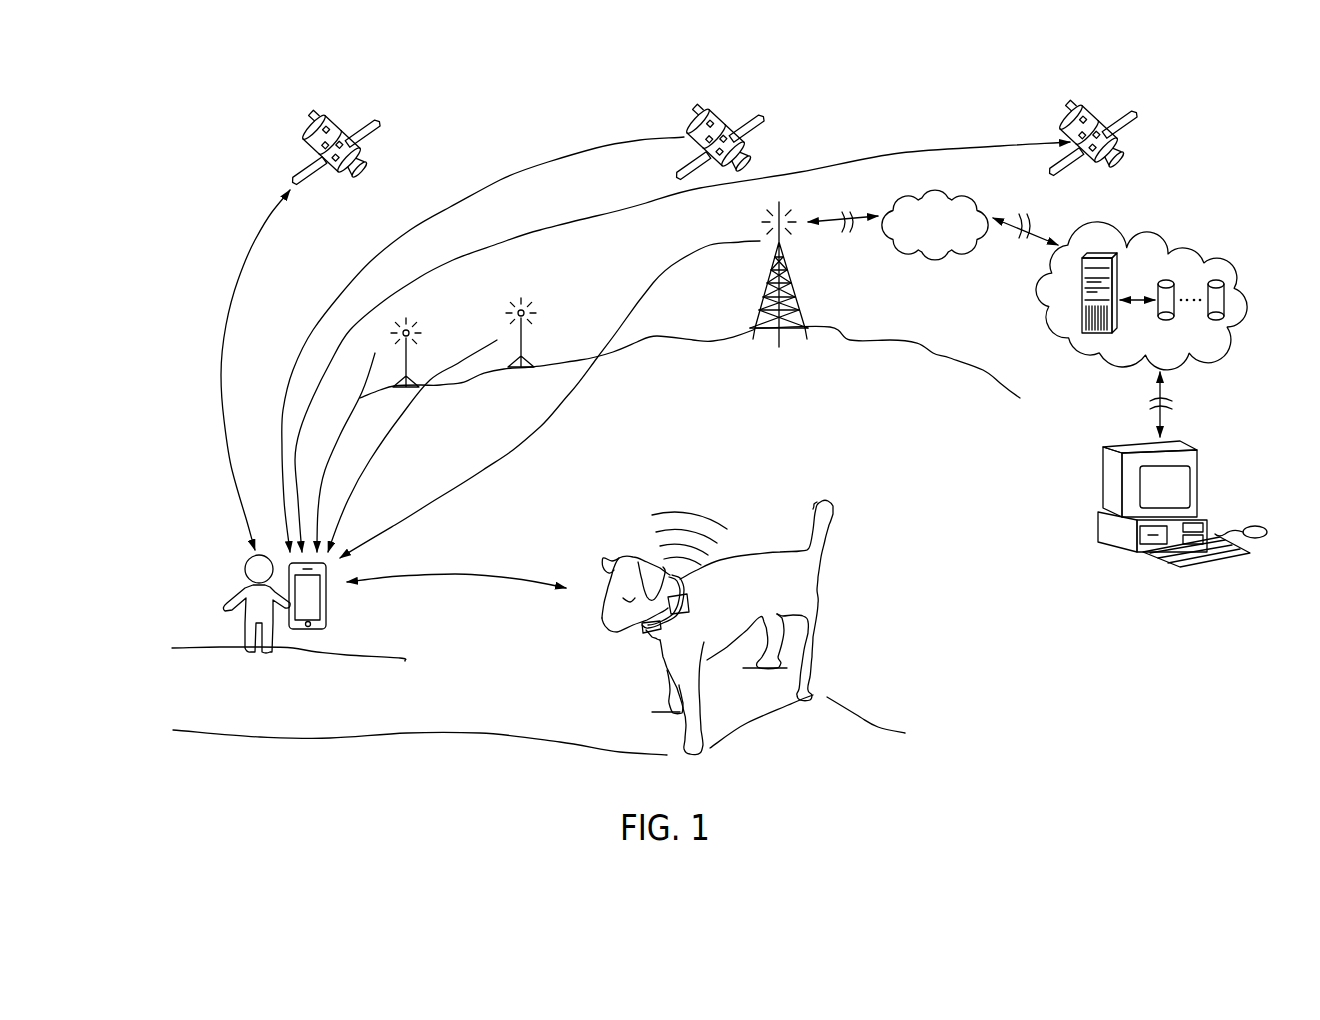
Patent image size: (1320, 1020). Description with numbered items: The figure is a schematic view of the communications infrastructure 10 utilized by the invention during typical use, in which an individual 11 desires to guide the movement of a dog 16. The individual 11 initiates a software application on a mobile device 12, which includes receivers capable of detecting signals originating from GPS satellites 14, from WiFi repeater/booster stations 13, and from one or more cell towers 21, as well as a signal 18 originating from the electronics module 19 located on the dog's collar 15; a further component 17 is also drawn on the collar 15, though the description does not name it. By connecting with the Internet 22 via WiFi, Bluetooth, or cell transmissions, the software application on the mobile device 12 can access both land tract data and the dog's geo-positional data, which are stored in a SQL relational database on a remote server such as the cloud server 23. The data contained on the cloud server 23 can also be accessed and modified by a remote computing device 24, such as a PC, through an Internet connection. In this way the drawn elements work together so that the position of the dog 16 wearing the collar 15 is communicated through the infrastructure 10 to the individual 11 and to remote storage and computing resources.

The communications infrastructure 10 is at (216, 190).
The individual 11 is at (238, 591).
The mobile device 12 is at (326, 609).
The WiFi repeater/booster stations 13 is at (407, 355).
The GPS satellites 14 is at (343, 123).
The collar 15 is at (640, 633).
The dog 16 is at (807, 588).
The collar 17 is at (650, 637).
The signal 18 is at (642, 529).
The electronics module 19 is at (688, 600).
The cell towers 21 is at (800, 260).
The Internet 22 is at (937, 252).
The cloud server 23 is at (1180, 230).
The remote computing device 24 is at (1103, 482).